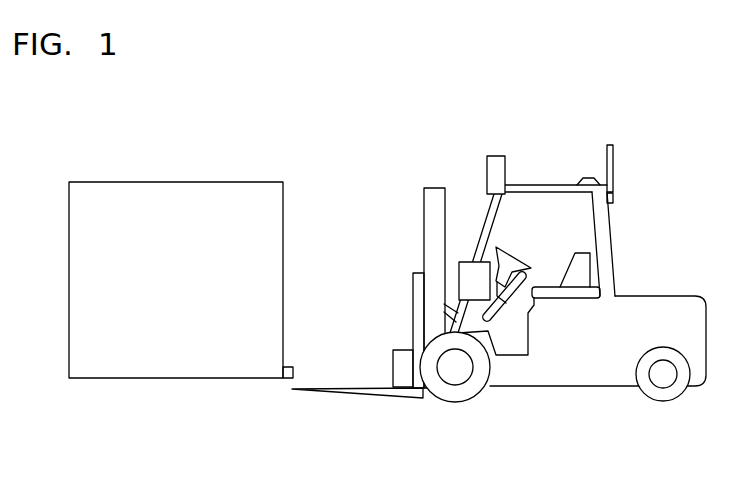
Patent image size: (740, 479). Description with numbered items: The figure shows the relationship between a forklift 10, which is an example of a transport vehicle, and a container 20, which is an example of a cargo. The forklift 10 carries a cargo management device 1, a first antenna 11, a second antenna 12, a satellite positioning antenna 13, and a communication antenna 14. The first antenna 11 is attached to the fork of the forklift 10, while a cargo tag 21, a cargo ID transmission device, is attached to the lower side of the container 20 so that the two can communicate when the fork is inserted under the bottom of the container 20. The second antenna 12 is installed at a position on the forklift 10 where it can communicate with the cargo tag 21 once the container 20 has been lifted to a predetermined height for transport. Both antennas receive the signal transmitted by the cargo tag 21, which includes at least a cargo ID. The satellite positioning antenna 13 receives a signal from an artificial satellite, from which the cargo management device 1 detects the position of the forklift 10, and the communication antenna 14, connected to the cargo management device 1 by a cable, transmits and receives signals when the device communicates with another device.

The cargo management device 1 is at (468, 262).
The forklift 10 is at (566, 386).
The first antenna 11 is at (393, 377).
The second antenna 12 is at (494, 156).
The satellite positioning antenna 13 is at (586, 178).
The communication antenna 14 is at (613, 163).
The container 20 is at (144, 182).
The cargo tag 21 is at (288, 366).